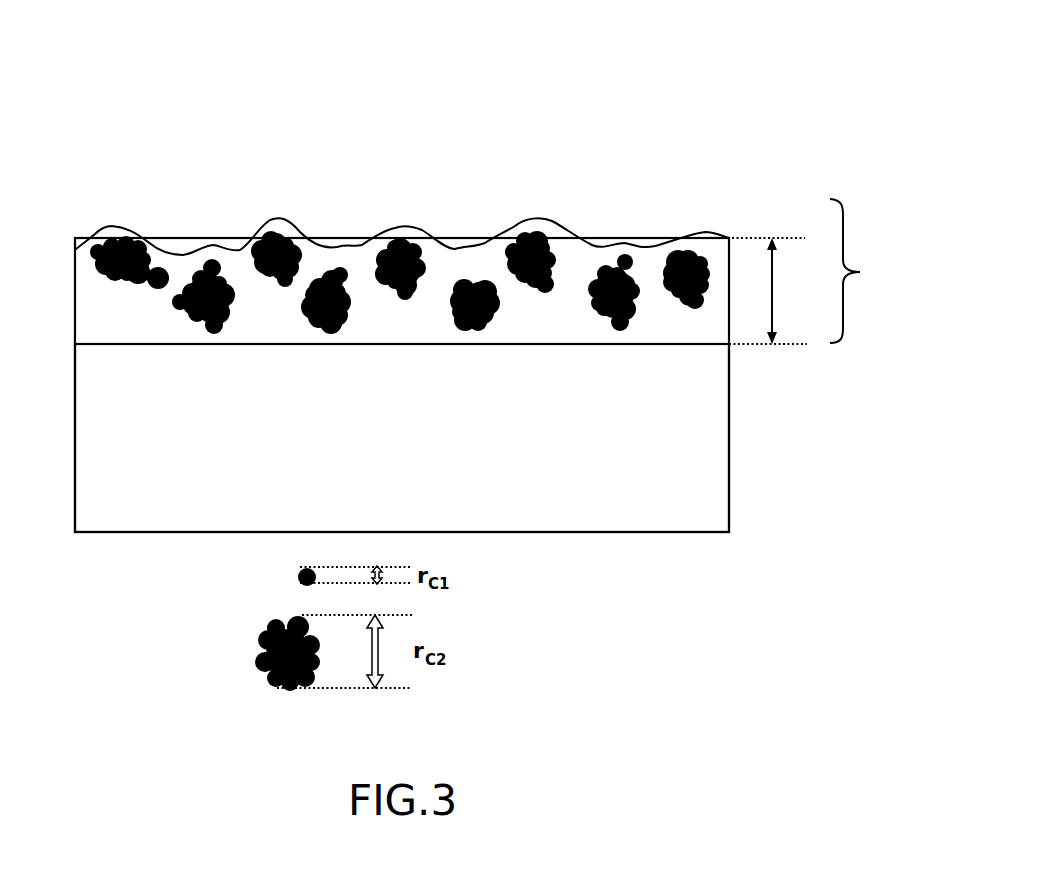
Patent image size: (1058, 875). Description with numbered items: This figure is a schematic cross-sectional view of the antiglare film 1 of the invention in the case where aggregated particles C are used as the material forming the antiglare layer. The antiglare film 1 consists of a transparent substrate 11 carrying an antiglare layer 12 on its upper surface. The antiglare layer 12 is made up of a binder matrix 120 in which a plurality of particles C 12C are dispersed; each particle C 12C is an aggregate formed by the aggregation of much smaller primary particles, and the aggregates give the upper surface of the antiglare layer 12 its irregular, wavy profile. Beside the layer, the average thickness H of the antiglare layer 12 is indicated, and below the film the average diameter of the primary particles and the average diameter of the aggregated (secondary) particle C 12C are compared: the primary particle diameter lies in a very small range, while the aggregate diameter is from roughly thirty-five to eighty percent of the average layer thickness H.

The antiglare film 1 is at (300, 125).
The transparent substrate 11 is at (679, 419).
The antiglare layer 12 is at (496, 208).
The binder matrix 120 is at (342, 256).
The particle C 12C is at (544, 233).